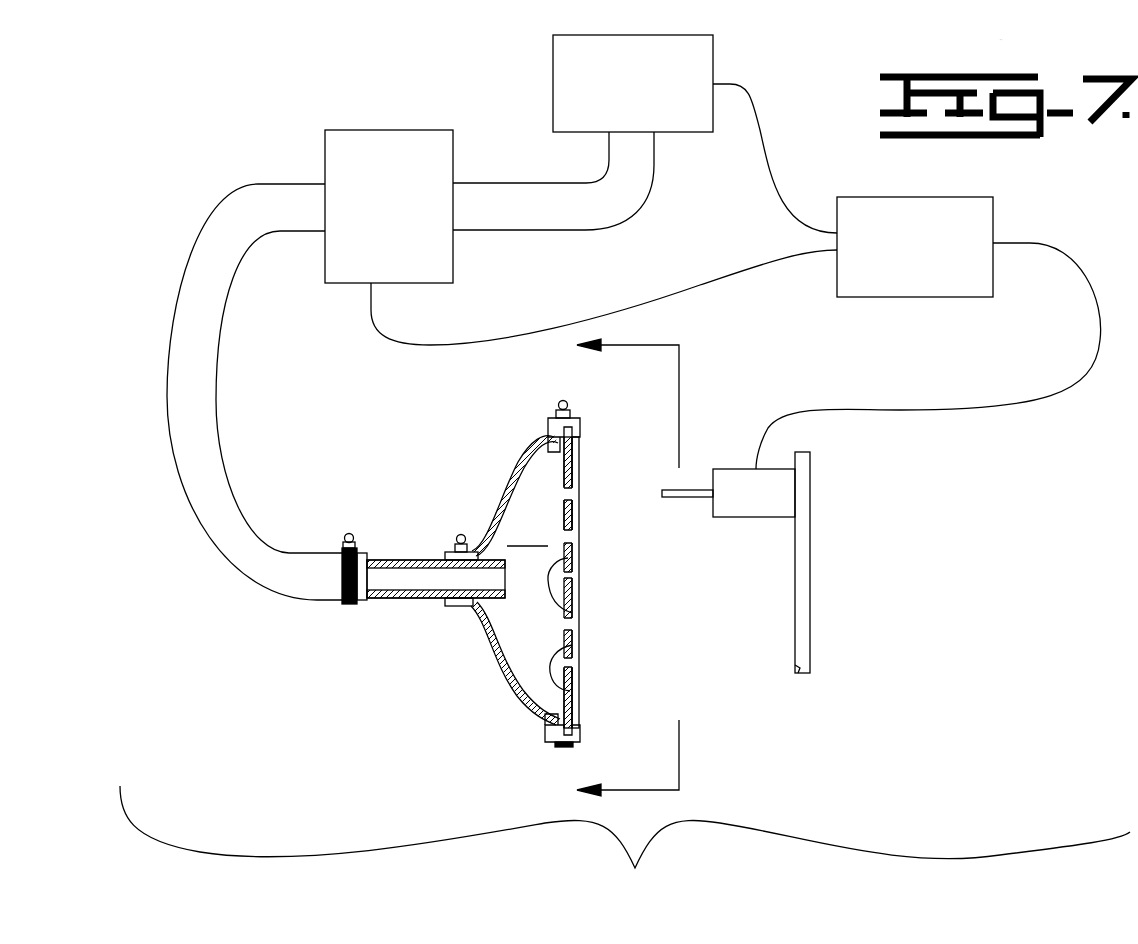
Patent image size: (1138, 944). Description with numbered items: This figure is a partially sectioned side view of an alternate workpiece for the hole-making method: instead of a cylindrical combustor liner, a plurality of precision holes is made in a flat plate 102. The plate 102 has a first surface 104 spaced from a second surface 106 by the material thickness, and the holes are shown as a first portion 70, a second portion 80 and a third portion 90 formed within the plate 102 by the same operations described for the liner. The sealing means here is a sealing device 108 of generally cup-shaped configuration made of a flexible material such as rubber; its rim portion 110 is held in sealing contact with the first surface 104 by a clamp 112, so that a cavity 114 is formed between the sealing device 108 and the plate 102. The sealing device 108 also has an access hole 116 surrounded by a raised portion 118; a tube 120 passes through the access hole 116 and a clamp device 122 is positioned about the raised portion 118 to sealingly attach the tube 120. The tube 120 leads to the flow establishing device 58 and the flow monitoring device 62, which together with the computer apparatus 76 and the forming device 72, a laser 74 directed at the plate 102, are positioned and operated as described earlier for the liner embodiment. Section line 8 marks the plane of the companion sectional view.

The flow establishing device 58 is at (553, 75).
The flow monitoring device 62 is at (325, 157).
The computer apparatus 76 is at (993, 222).
The forming device 72 is at (738, 513).
The laser beam 74 is at (696, 490).
The section line 8- 8 is at (646, 570).
The access hole 116 is at (442, 590).
The raised portion 118 is at (450, 600).
The tube 120 is at (418, 560).
The clamp device 122 is at (464, 536).
The rim portion 110 is at (548, 450).
The sealing device 108 is at (515, 703).
The first portion 70 is at (573, 582).
The second portion 80 is at (573, 535).
The third portion 90 is at (573, 493).
The plate 102 is at (573, 614).
The first surface 104 is at (573, 645).
The second surface 106 is at (573, 706).
The clamp 112 is at (579, 418).
The cavity 114 is at (528, 532).